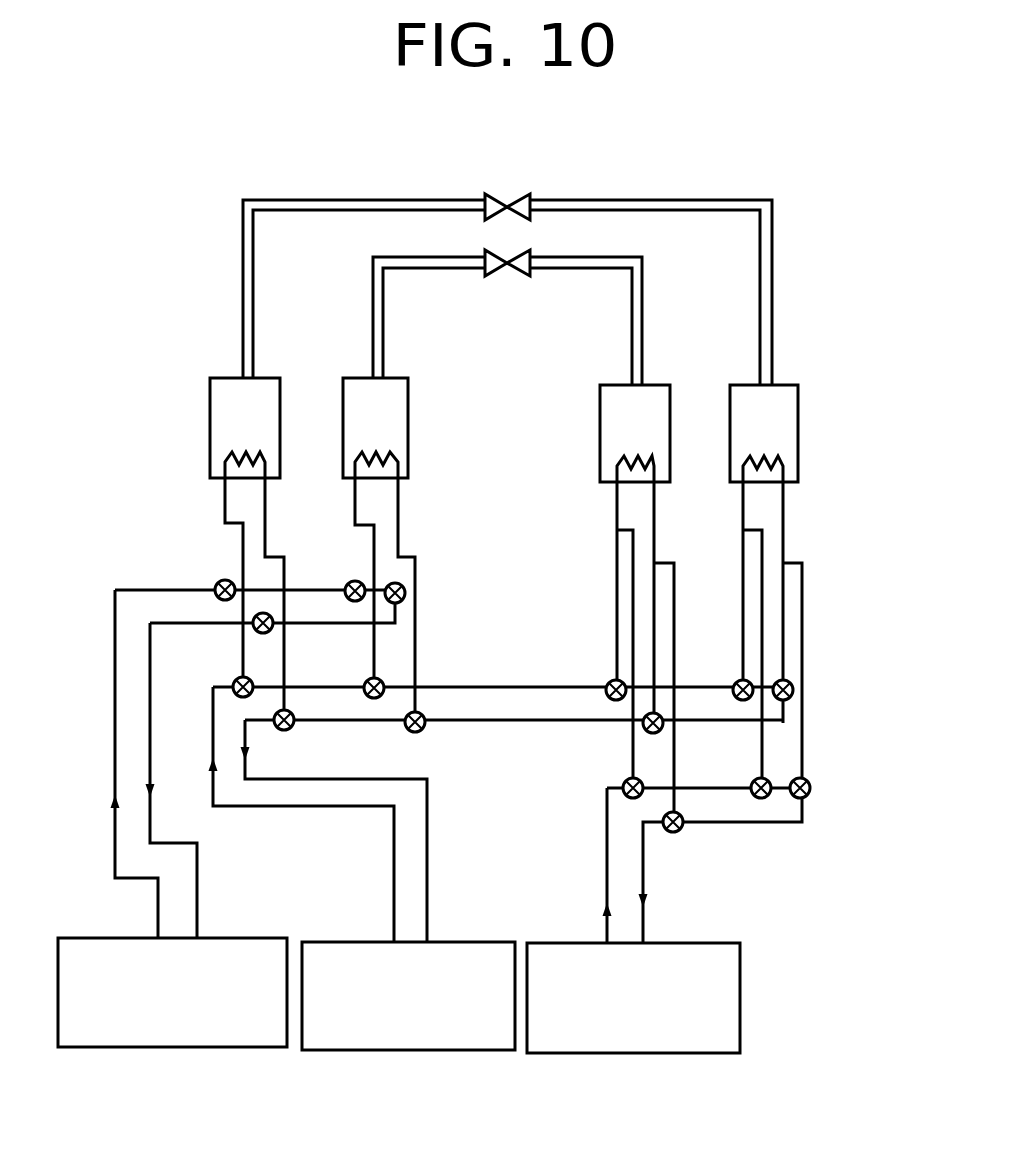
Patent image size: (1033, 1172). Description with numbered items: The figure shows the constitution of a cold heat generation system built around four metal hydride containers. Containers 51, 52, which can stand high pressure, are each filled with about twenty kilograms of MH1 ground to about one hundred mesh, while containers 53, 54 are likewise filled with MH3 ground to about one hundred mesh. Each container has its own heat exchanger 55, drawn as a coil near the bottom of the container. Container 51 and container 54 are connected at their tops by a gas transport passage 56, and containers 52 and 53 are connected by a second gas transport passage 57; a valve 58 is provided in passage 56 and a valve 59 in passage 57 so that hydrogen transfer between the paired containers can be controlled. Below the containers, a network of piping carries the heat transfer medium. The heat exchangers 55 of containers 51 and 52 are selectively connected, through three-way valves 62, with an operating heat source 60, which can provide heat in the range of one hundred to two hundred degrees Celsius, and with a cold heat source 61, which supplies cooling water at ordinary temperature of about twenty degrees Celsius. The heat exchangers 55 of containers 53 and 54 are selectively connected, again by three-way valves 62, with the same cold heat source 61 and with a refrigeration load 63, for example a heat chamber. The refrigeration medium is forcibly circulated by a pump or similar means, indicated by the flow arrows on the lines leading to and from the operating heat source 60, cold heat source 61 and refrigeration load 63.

The container 51 is at (210, 388).
The container 52 is at (343, 392).
The container 53 is at (600, 393).
The container 54 is at (730, 395).
The heat exchanger 55 is at (265, 460).
The gas transport passage 56 is at (643, 198).
The gas transport passage 57 is at (580, 273).
The valve 58 is at (502, 196).
The valve 59 is at (512, 280).
The operating heat source 60 is at (266, 1047).
The cold heat source 61 is at (493, 1050).
The three-way valve 62 is at (213, 585).
The refrigeration load 63 is at (720, 1053).